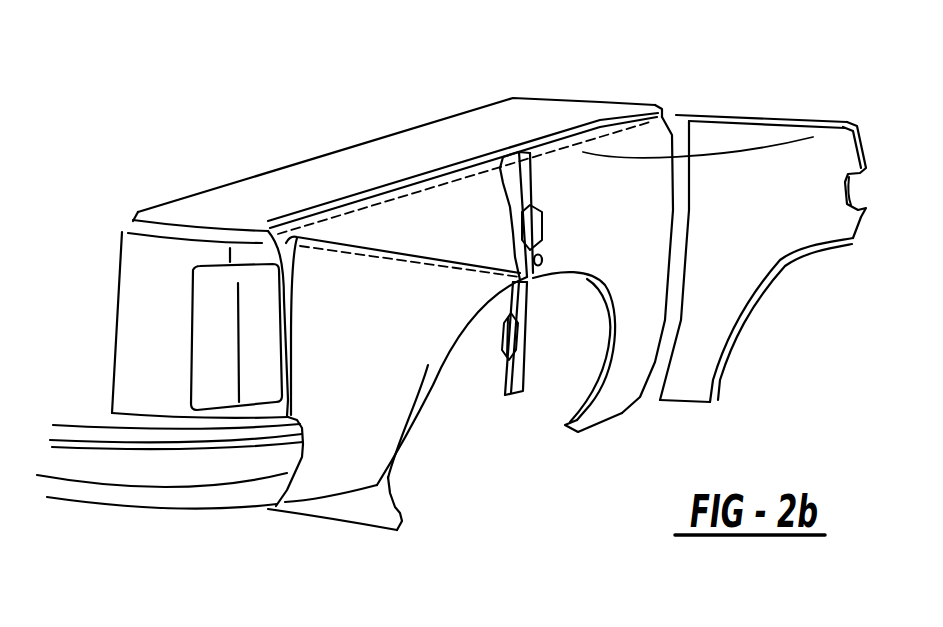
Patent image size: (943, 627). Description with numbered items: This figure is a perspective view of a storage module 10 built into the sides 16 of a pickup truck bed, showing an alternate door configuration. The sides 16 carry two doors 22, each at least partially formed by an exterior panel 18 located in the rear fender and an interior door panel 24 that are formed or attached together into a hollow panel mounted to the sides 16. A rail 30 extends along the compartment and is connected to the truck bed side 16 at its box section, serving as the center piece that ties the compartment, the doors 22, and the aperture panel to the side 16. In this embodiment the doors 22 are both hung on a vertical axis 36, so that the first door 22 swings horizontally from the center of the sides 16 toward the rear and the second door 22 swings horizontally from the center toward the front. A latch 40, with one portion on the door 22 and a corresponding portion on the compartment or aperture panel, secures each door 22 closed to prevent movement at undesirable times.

The storage module 10 is at (714, 72).
The sides 16 is at (352, 127).
The exterior panel 18 is at (372, 503).
The doors 22 is at (400, 493).
The interior door panel 24 is at (780, 222).
The rail 30 is at (287, 165).
The axis 36 is at (670, 217).
The latch 40 is at (522, 225).